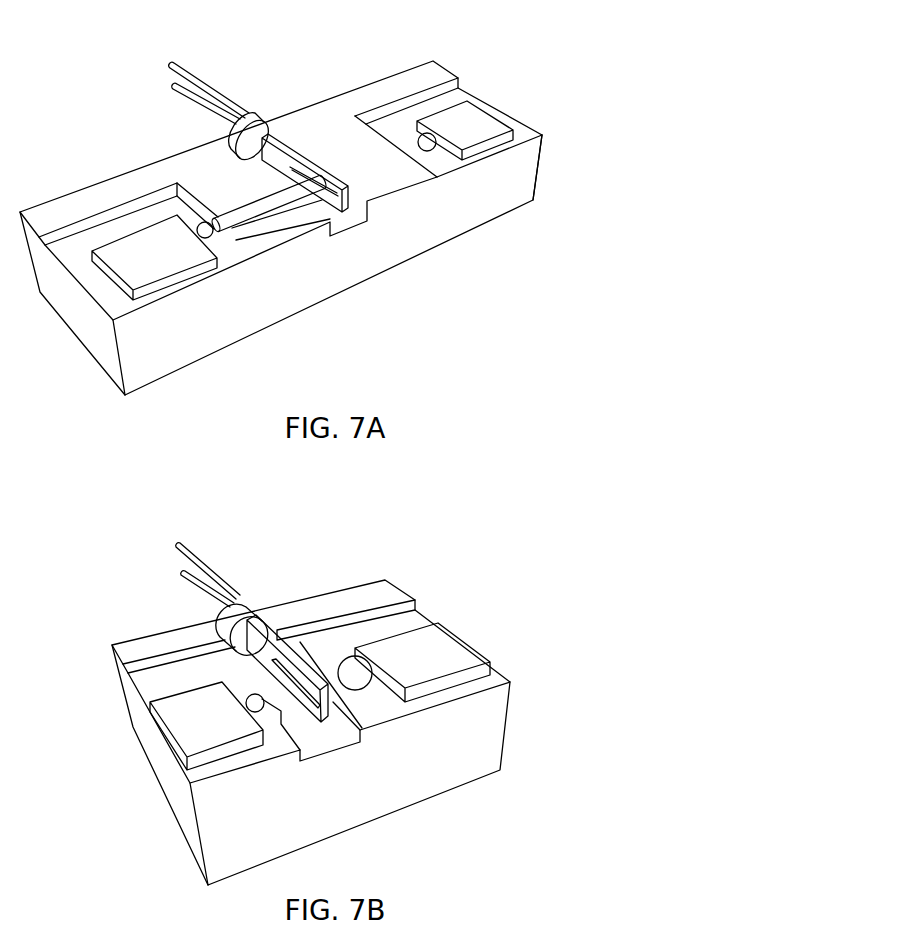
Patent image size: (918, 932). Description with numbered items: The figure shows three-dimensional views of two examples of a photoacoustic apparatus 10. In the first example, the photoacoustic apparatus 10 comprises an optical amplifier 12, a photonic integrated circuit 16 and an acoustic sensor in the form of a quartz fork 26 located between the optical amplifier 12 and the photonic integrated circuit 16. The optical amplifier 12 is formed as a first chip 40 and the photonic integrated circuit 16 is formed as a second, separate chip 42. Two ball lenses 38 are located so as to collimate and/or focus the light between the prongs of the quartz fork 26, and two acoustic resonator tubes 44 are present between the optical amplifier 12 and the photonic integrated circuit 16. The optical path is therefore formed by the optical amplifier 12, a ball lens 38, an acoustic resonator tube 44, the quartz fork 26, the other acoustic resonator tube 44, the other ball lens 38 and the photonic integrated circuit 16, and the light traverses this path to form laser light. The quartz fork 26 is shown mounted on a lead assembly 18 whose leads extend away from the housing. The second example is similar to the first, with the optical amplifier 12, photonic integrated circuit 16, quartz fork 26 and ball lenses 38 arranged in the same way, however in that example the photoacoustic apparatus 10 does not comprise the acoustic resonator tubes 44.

In FIG. 7A, the photoacoustic apparatus 10 is at (542, 168).
In FIG. 7B, the photoacoustic apparatus 10 is at (508, 708).
In FIG. 7A, the optical amplifier 12 is at (173, 289).
In FIG. 7B, the optical amplifier 12 is at (170, 736).
In FIG. 7A, the photonic integrated circuit 16 is at (484, 155).
In FIG. 7B, the photonic integrated circuit 16 is at (446, 650).
In FIG. 7A, the lead assembly 18 is at (370, 68).
In FIG. 7B, the lead assembly 18 is at (226, 603).
In FIG. 7A, the quartz fork 26 is at (280, 140).
In FIG. 7B, the quartz fork 26 is at (270, 643).
In FIG. 7A, the ball lens 38 is at (213, 226).
In FIG. 7B, the ball lens 38 is at (254, 696).
In FIG. 7A, the first chip 40 is at (222, 305).
In FIG. 7A, the second chip 42 is at (510, 167).
In FIG. 7A, the acoustic resonator tube 44 is at (247, 209).